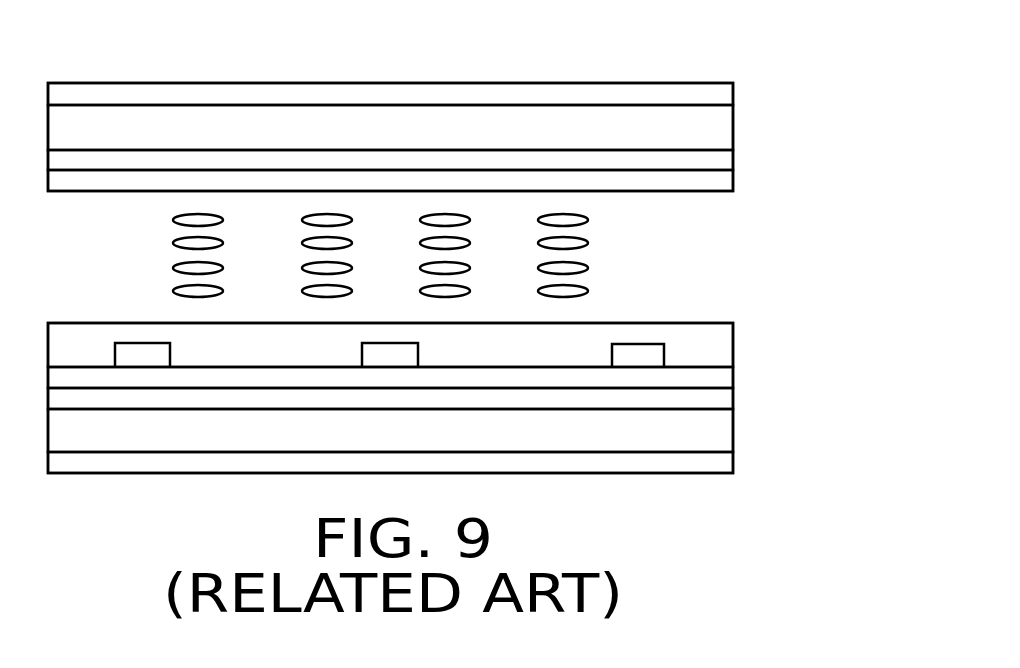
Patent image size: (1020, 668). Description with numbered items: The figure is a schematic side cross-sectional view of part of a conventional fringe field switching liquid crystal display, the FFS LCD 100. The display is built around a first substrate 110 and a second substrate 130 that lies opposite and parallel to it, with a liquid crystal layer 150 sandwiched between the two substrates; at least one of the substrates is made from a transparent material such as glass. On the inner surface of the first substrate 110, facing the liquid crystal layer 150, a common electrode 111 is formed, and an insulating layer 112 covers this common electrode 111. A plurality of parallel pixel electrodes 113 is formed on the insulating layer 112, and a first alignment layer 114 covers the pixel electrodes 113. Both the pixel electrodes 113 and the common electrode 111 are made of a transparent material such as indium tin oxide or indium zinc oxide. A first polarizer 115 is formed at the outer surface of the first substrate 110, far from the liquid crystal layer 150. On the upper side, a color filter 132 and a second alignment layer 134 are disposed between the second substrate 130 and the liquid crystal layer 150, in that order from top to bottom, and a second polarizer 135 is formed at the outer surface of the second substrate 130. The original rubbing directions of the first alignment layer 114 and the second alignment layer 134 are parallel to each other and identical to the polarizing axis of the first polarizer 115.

The FFS LCD 100 is at (291, 44).
The second polarizer 135 is at (718, 96).
The second substrate 130 is at (718, 130).
The color filter 132 is at (718, 167).
The second alignment layer 134 is at (720, 183).
The liquid crystal layer 150 is at (613, 200).
The pixel electrodes 113 is at (648, 355).
The first alignment layer 114 is at (712, 350).
The insulating layer 112 is at (717, 380).
The common electrode 111 is at (717, 400).
The first substrate 110 is at (707, 425).
The first polarizer 115 is at (710, 463).